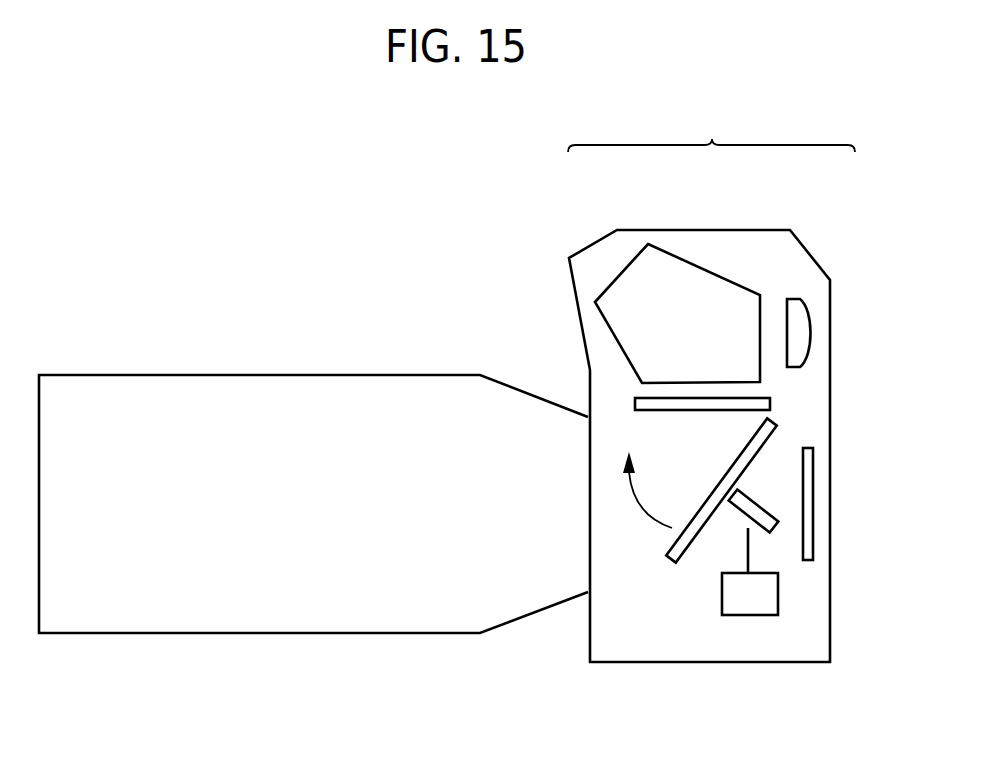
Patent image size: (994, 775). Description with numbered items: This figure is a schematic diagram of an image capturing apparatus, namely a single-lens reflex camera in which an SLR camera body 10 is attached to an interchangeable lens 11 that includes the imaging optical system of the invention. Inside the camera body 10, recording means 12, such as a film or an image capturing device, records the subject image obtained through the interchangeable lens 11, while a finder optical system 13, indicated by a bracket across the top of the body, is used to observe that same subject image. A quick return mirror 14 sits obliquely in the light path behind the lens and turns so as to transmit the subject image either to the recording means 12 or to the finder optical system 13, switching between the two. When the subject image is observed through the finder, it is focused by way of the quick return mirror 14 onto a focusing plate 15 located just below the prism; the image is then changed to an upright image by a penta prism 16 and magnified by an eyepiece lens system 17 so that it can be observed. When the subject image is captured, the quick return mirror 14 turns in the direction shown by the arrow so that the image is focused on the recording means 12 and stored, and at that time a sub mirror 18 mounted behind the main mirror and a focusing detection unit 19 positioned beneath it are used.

The SLR camera body 10 is at (805, 647).
The interchangeable lens 11 is at (285, 390).
The recording means 12 is at (808, 488).
The finder optical system 13 is at (711, 129).
The quick return mirror 14 is at (670, 560).
The focusing plate 15 is at (657, 400).
The penta prism 16 is at (683, 270).
The eyepiece lens system 17 is at (795, 302).
The sub mirror 18 is at (740, 498).
The focusing detection unit 19 is at (775, 602).